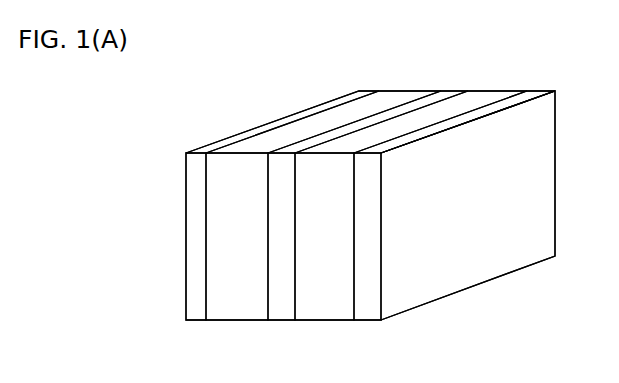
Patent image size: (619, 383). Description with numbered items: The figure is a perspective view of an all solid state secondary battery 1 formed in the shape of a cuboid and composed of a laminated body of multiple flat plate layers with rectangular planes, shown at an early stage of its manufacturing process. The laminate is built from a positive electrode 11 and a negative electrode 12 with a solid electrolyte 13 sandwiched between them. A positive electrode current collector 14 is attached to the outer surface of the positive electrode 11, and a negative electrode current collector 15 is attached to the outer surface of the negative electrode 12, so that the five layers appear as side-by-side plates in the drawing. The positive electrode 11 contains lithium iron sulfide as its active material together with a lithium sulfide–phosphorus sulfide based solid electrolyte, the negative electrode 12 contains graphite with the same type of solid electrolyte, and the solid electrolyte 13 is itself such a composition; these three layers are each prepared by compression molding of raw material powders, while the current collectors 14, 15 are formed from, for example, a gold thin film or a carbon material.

The all solid state secondary battery 1 is at (217, 108).
The positive electrode 11 is at (236, 310).
The negative electrode 12 is at (325, 310).
The solid electrolyte 13 is at (280, 310).
The positive electrode current collector 14 is at (195, 310).
The negative electrode current collector 15 is at (369, 310).